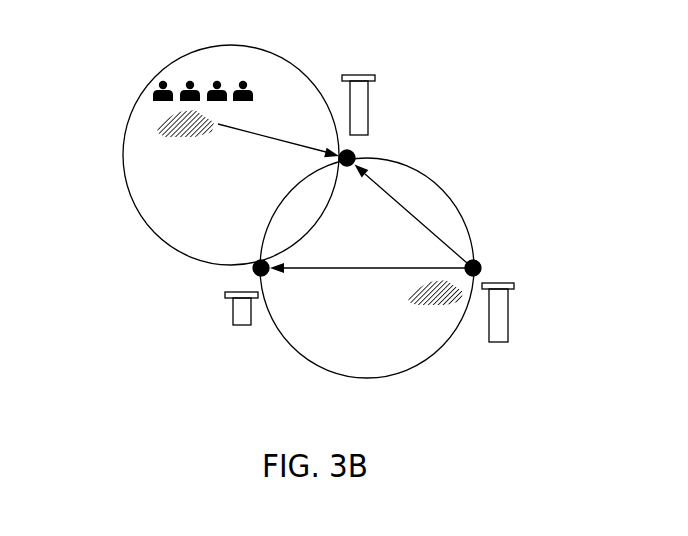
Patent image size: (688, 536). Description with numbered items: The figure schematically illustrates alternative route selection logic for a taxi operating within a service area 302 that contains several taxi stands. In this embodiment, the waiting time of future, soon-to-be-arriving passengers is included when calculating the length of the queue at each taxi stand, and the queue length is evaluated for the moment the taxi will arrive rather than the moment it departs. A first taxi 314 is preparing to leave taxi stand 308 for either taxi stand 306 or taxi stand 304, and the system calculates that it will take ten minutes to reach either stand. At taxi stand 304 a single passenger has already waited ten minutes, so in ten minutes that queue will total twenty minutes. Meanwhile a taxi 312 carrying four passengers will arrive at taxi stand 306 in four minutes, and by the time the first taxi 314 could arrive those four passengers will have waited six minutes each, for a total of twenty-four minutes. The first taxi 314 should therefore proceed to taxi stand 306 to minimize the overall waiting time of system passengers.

The service area 302 is at (278, 334).
The taxi stand 304 is at (256, 270).
The taxi stand 306 is at (355, 152).
The taxi stand 308 is at (481, 267).
The taxi 312 is at (158, 132).
The first taxi 314 is at (428, 311).